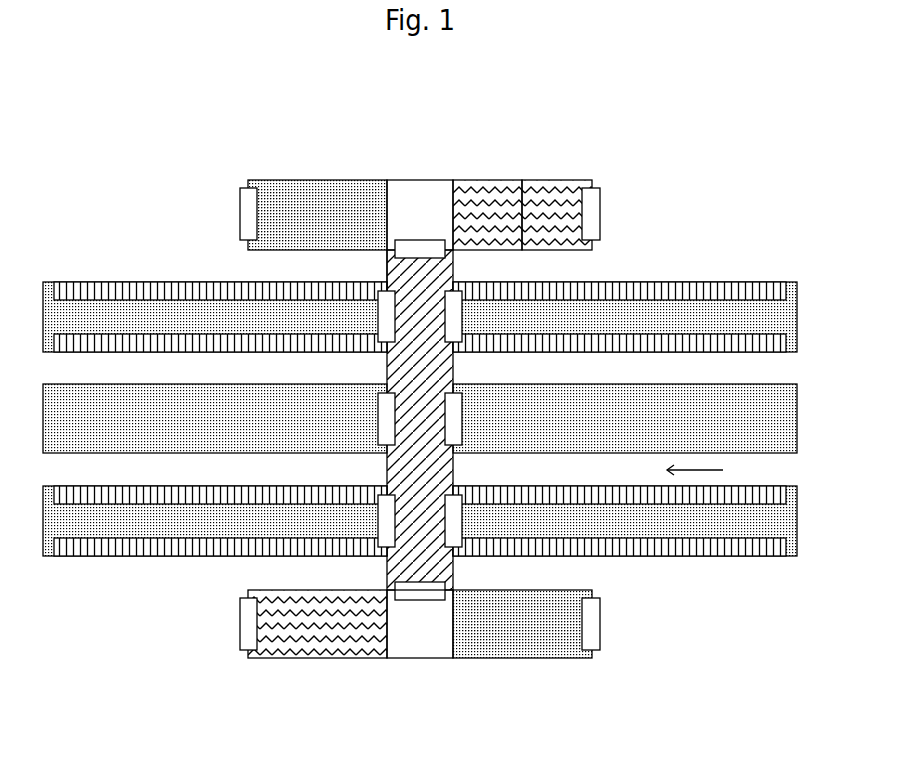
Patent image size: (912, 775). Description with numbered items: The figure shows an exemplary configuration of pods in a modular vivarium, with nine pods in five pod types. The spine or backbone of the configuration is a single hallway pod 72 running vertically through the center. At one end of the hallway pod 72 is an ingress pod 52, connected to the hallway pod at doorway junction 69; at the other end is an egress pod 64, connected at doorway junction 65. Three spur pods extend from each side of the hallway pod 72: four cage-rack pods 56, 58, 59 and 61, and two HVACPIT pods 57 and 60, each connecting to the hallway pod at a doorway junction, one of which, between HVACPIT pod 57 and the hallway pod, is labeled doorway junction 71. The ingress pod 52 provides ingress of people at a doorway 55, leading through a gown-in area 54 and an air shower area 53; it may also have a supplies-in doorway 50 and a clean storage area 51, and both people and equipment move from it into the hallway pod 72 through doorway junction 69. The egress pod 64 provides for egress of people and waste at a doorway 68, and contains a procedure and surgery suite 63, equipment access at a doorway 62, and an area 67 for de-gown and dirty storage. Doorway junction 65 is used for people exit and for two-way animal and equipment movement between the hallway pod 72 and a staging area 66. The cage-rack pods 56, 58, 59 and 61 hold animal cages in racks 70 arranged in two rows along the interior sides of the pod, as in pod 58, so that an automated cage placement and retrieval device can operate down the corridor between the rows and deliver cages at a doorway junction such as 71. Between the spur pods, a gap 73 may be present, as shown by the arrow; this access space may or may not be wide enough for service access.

The supplies-in doorway 50 is at (243, 198).
The clean storage area 51 is at (298, 192).
The ingress pod 52 is at (352, 180).
The air shower area 53 is at (482, 192).
The gown-in area 54 is at (550, 192).
The doorway 55 is at (600, 203).
The cage-rack pod 56 is at (43, 302).
The HVACPIT pod 57 is at (43, 404).
The cage-rack pod 58 is at (197, 534).
The cage-rack pod 59 is at (797, 310).
The HVACPIT pod 60 is at (797, 407).
The cage-rack pod 61 is at (797, 510).
The doorway 62 is at (597, 613).
The procedure and surgery suite 63 is at (530, 630).
The egress pod 64 is at (488, 655).
The doorway junction 65 is at (428, 600).
The staging area 66 is at (402, 650).
The de-gown and dirty storage area 67 is at (340, 648).
The doorway 68 is at (250, 633).
The doorway junction 69 is at (432, 249).
The racks 70 is at (172, 553).
The doorway junction 71 is at (377, 398).
The hallway pod 72 is at (386, 265).
The gap 73 is at (710, 471).